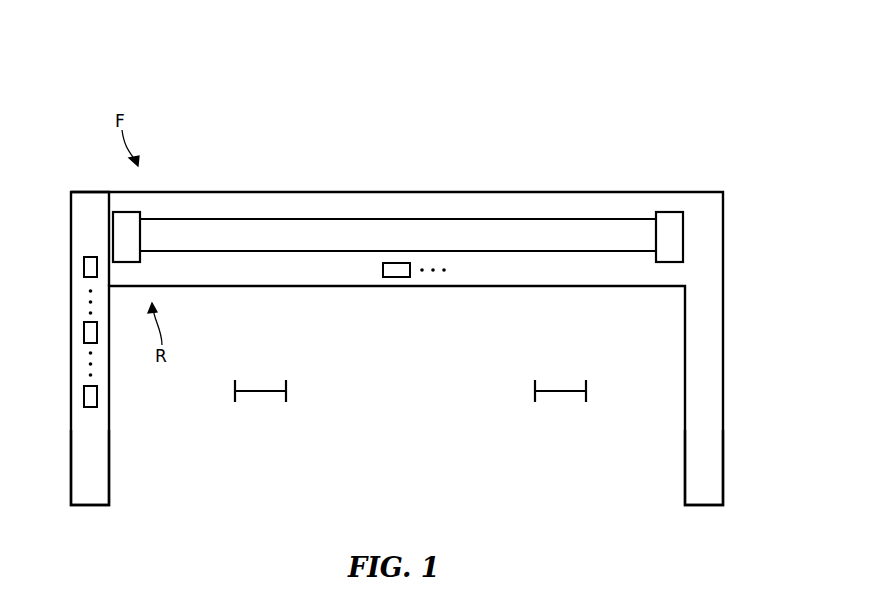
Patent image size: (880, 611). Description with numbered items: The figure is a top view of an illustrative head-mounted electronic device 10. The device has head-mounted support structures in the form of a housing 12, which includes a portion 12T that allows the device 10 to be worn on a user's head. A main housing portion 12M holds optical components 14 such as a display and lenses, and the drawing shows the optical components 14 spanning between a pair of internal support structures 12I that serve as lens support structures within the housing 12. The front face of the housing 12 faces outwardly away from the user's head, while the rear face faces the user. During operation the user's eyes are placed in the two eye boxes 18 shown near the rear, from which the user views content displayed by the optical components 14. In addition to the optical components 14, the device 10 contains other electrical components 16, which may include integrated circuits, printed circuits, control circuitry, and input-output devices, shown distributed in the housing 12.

The electronic device 10 is at (541, 66).
The housing 12 is at (725, 203).
The housing portion 12T is at (78, 456).
The main housing portion 12M is at (56, 192).
The internal support structures 12I is at (113, 222).
The optical components 14 is at (588, 219).
The electrical components 16 is at (84, 268).
The eye boxes 18 is at (287, 393).